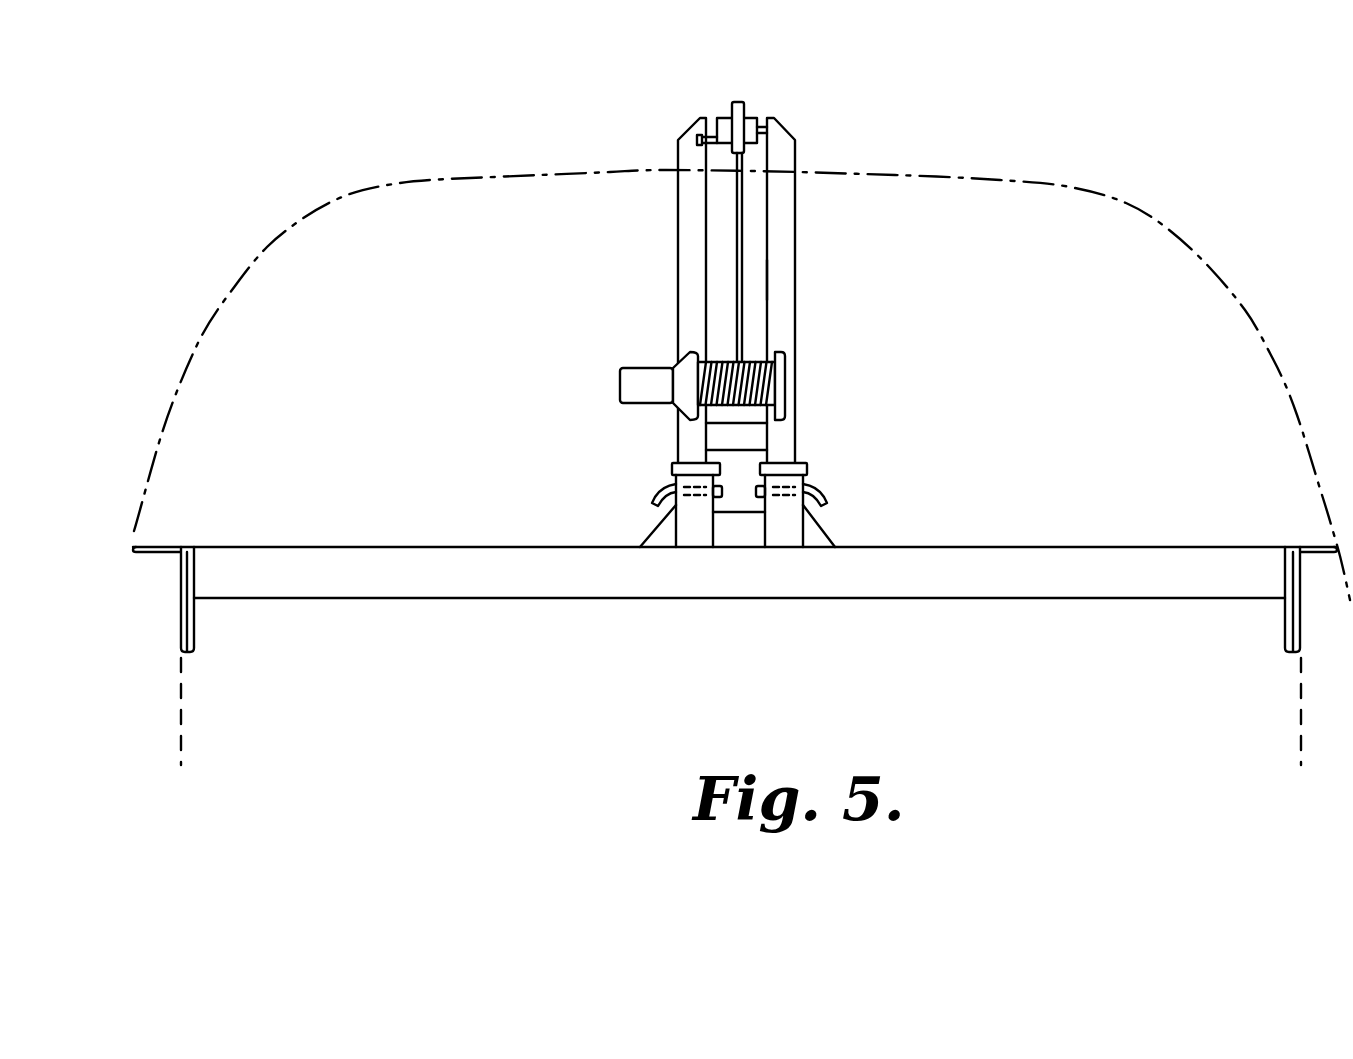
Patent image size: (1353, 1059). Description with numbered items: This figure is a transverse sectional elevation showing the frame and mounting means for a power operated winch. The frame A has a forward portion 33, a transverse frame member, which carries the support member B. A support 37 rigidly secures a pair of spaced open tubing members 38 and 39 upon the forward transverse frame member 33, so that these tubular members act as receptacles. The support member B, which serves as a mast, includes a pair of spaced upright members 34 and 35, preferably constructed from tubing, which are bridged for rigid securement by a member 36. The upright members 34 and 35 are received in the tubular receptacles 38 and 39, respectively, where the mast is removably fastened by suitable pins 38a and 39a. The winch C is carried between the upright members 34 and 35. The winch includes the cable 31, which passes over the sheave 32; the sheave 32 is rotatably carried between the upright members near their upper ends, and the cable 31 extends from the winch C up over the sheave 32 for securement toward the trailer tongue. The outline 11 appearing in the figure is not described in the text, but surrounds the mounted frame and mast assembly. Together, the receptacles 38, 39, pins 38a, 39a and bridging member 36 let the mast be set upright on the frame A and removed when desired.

The vehicle body outline 11 is at (1126, 205).
The cable 31 is at (737, 272).
The sheave 32 is at (747, 105).
The forward portion 33 is at (398, 582).
The upright member 34 is at (688, 216).
The upright member 35 is at (793, 192).
The bridging member 36 is at (753, 432).
The support 37 is at (742, 532).
The open tubing member 38 is at (692, 529).
The pin 38a is at (652, 500).
The open tubing member 39 is at (790, 532).
The pin 39a is at (821, 488).
The frame A is at (1132, 580).
The support member B is at (797, 277).
The winch C is at (782, 378).